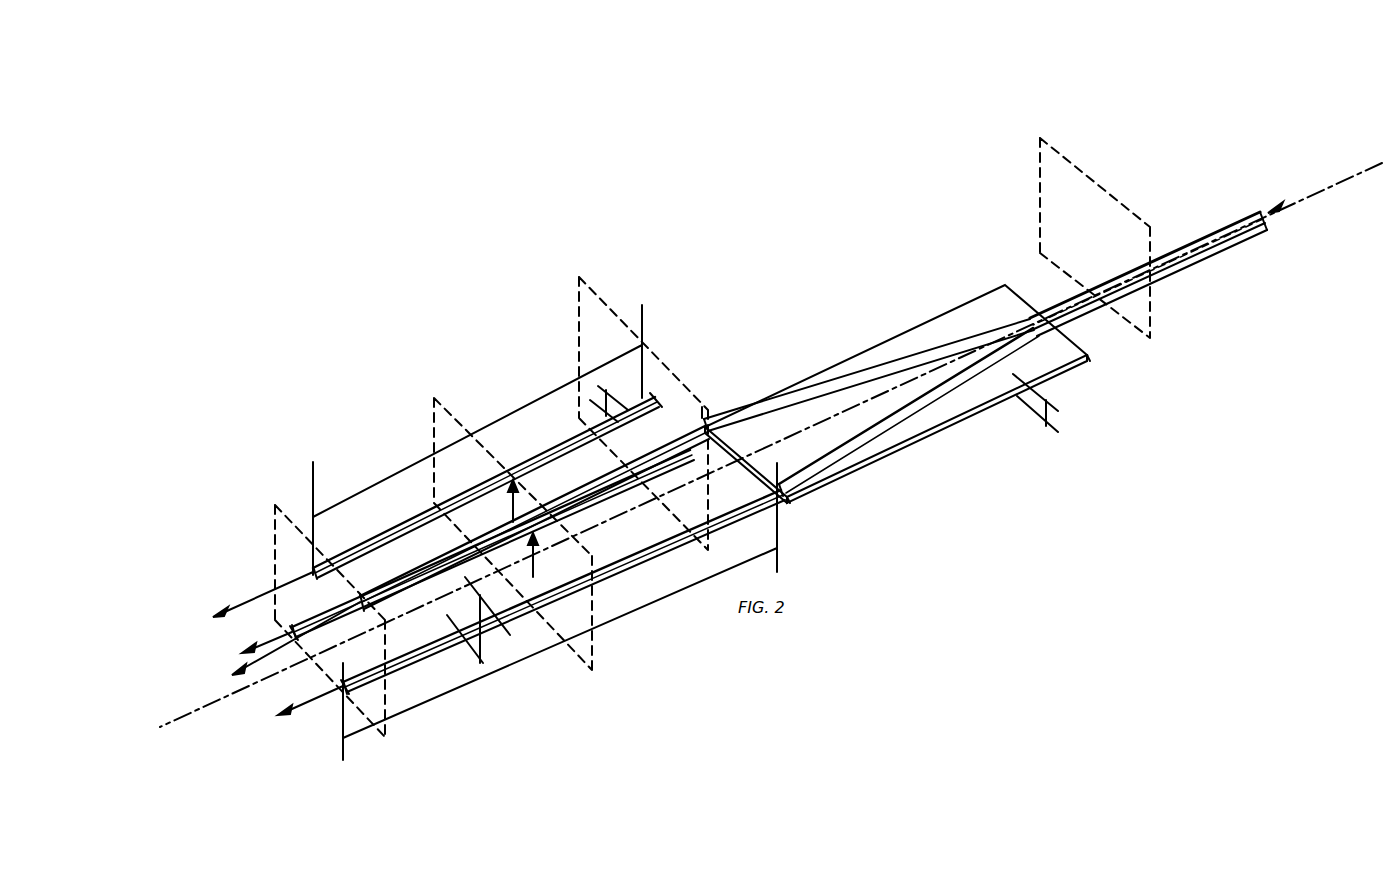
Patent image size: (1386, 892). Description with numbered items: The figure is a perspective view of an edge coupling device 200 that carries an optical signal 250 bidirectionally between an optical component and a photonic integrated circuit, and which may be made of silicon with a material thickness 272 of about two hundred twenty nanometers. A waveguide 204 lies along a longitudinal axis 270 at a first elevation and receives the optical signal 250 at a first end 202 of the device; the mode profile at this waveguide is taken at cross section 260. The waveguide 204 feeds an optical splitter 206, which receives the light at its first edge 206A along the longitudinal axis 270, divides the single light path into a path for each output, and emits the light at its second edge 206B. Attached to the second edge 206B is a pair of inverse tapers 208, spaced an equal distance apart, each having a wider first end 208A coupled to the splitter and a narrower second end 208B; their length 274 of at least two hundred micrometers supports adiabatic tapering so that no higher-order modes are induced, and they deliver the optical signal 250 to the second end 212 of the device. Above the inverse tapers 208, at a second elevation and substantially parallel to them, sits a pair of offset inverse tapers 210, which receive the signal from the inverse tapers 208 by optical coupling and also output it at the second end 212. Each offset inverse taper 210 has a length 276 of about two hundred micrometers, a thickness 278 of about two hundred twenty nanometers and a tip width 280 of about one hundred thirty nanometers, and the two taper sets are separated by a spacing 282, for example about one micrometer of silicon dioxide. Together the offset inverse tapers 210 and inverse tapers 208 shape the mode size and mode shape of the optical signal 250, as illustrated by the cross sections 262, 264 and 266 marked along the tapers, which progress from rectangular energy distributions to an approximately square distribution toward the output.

The edge coupling device 200 is at (292, 293).
The first end 202 is at (1268, 223).
The waveguide 204 is at (1132, 272).
The optical splitter 206 is at (937, 333).
The first edge 206A is at (1085, 348).
The second edge 206B is at (790, 501).
The inverse tapers 208 is at (605, 505).
The first end of the inverse tapers 208A is at (844, 493).
The second end of the inverse tapers 208B is at (292, 634).
The offset inverse tapers 210 is at (513, 478).
The second end 212 is at (342, 683).
The optical signal 250 is at (1277, 206).
The cross section 260 is at (1043, 138).
The cross section 262 is at (578, 283).
The cross section 264 is at (432, 410).
The cross section 266 is at (274, 513).
The longitudinal axis 270 is at (1369, 164).
The thickness 272 is at (1048, 420).
The length of the inverse tapers 274 is at (620, 620).
The length of the offset inverse tapers 276 is at (495, 423).
The thickness of the offset inverse tapers 278 is at (598, 395).
The tip width of the offset inverse tapers 280 is at (668, 392).
The spacing 282 is at (485, 648).